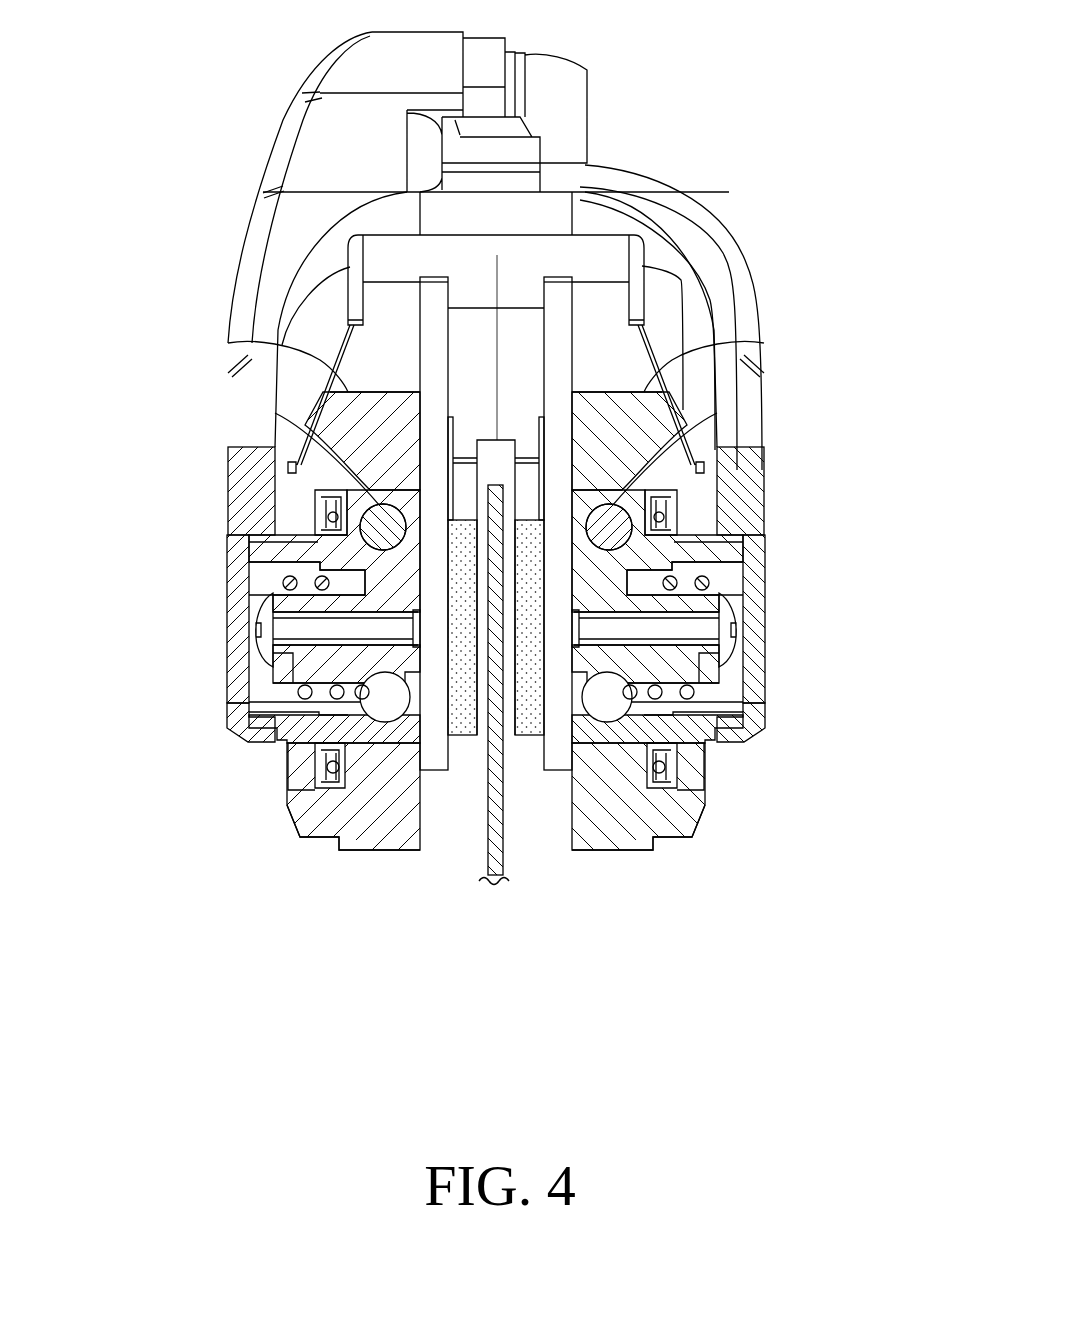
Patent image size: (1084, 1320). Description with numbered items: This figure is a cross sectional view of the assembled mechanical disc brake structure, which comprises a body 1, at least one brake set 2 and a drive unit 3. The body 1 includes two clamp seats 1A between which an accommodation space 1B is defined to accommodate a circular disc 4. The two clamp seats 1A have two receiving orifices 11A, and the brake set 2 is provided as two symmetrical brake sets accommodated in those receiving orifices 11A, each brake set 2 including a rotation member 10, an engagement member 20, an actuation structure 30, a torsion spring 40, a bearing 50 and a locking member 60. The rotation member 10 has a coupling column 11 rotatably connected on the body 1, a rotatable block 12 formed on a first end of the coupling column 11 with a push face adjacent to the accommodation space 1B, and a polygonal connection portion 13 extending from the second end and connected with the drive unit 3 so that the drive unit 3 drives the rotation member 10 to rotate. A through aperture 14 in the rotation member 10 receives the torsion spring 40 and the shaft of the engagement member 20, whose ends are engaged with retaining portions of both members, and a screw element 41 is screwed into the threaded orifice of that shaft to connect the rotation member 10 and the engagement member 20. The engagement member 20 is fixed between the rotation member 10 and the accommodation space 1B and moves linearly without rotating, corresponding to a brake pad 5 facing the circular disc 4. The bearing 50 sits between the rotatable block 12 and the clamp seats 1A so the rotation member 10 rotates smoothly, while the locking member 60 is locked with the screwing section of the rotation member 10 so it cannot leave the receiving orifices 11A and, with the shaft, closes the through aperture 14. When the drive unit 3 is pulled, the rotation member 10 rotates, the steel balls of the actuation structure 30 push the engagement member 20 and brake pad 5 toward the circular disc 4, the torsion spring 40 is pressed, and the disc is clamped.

The body 1 is at (688, 437).
The clamp seat 1A is at (373, 427).
The accommodation space 1B is at (497, 468).
The brake set 2 is at (208, 614).
The drive unit 3 is at (268, 176).
The circular disc 4 is at (497, 885).
The brake pad 5 is at (461, 748).
The rotation member 10 is at (357, 792).
The coupling column 11 is at (303, 742).
The receiving orifice 11A is at (297, 455).
The rotatable block 12 is at (373, 845).
The polygonal connection portion 13 is at (243, 740).
The through aperture 14 is at (272, 692).
The engagement member 20 is at (398, 772).
The actuation structure 30 is at (358, 517).
The torsion spring 40 is at (283, 580).
The screw element 41 is at (262, 616).
The bearing 50 is at (325, 790).
The locking member 60 is at (218, 698).